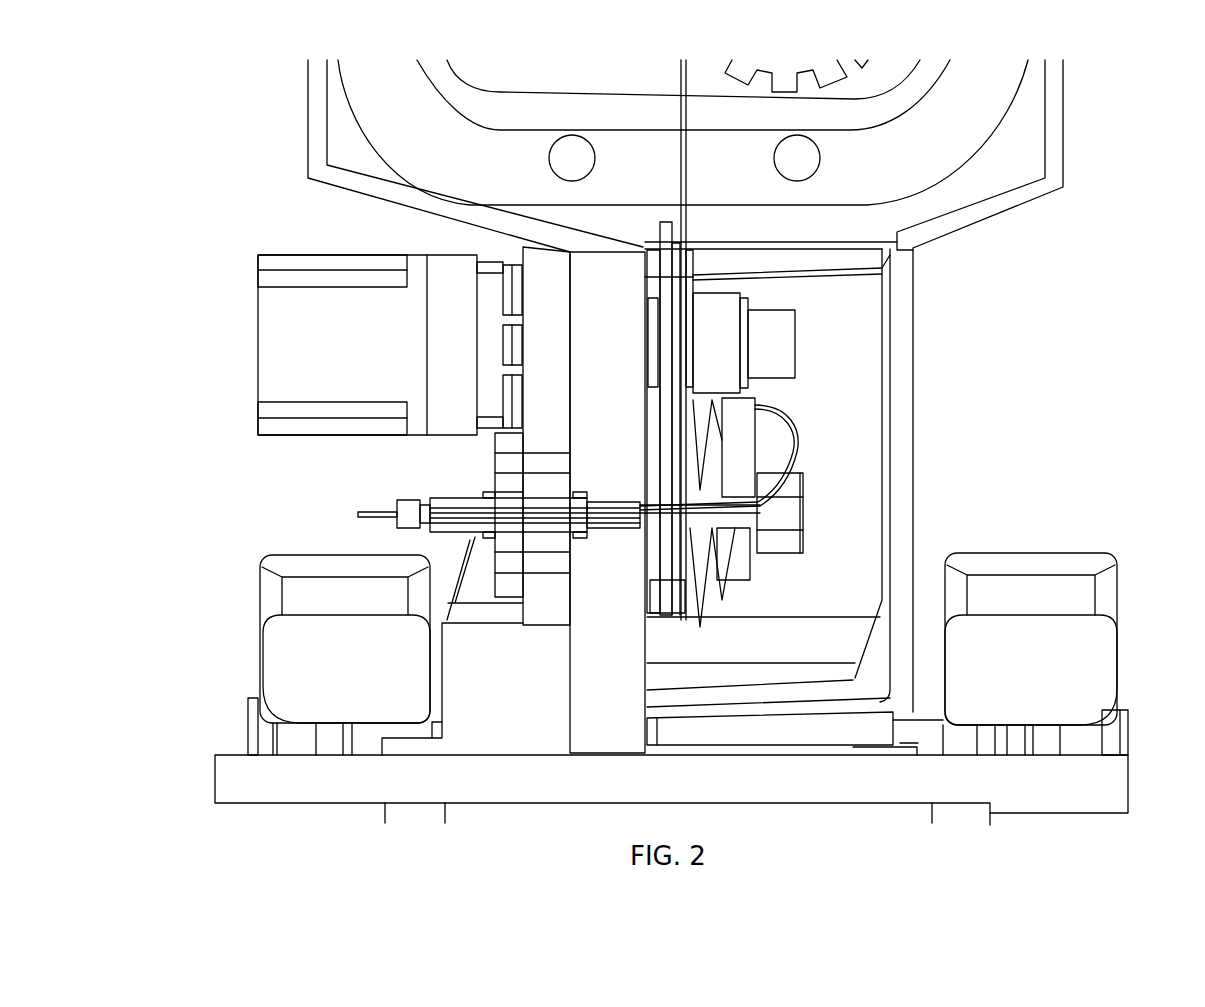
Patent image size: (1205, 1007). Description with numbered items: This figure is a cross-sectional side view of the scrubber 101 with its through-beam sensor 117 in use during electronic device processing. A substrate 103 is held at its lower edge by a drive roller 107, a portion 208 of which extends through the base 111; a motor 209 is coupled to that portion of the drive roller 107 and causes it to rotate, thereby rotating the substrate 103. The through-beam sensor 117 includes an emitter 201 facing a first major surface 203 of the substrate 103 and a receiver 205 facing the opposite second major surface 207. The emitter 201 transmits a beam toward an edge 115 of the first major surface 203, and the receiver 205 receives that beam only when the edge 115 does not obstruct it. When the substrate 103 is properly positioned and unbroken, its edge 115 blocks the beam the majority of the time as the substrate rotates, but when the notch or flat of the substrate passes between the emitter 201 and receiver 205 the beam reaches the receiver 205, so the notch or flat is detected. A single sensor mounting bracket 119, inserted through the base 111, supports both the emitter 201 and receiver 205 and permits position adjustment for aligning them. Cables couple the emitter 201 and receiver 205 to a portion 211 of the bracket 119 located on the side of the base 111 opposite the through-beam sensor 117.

The scrubber 101 is at (1073, 100).
The substrate 103 is at (662, 108).
The drive roller 107 is at (660, 222).
The base 111 is at (583, 683).
The edge 115 is at (682, 417).
The through-beam sensor 117 is at (788, 392).
The sensor mounting bracket 119 is at (740, 580).
The emitter 201 is at (750, 423).
The first major surface 203 is at (686, 163).
The receiver 205 is at (645, 412).
The second major surface 207 is at (680, 163).
The portion of the drive roller 208 is at (552, 337).
The motor 209 is at (262, 252).
The portion of the bracket 211 is at (447, 495).